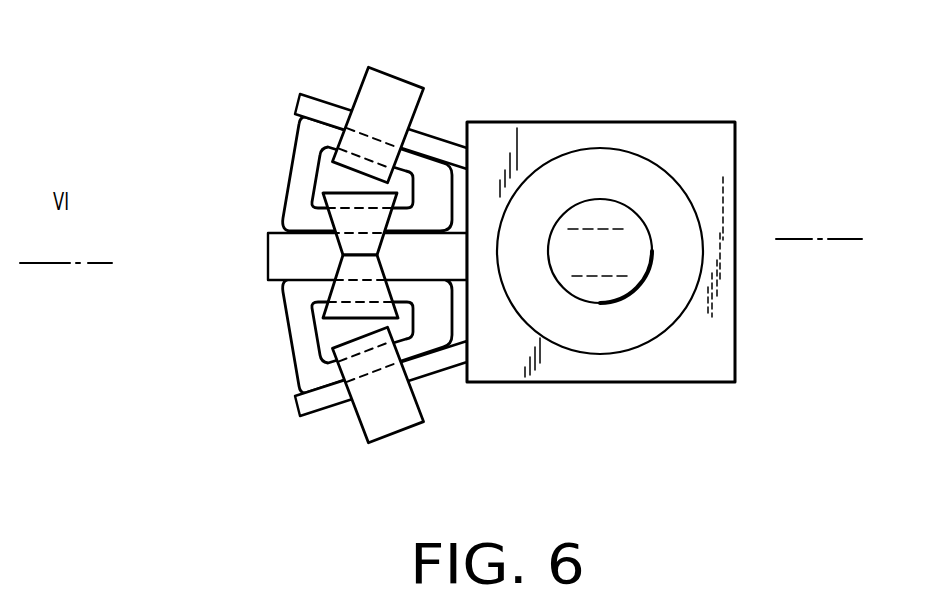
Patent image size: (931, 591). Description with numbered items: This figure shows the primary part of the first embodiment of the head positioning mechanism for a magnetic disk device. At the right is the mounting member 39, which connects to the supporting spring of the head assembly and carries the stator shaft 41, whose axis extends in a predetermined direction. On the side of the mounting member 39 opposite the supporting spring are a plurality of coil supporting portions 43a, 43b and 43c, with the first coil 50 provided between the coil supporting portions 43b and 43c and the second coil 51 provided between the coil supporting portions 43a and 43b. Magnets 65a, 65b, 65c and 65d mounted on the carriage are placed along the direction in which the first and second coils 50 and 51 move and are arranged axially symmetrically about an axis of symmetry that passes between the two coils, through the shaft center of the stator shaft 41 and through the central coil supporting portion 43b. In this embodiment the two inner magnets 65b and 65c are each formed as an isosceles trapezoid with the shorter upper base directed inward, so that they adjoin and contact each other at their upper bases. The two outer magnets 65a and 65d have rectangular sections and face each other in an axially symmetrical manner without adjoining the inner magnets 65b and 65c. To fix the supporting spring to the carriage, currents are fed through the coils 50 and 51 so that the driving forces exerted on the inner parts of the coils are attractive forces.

The mounting member 39 is at (652, 360).
The stator shaft 41 is at (607, 199).
The coil supporting portion 43a is at (301, 412).
The coil supporting portion 43b is at (290, 250).
The coil supporting portion 43c is at (422, 142).
The first coil 50 is at (288, 165).
The second coil 51 is at (288, 343).
The magnet 65a is at (370, 408).
The magnet 65b is at (314, 305).
The magnet 65c is at (314, 200).
The magnet 65d is at (360, 85).